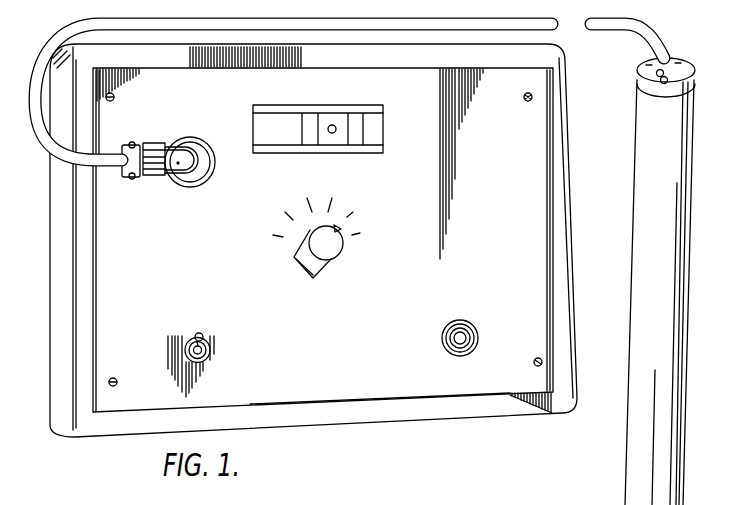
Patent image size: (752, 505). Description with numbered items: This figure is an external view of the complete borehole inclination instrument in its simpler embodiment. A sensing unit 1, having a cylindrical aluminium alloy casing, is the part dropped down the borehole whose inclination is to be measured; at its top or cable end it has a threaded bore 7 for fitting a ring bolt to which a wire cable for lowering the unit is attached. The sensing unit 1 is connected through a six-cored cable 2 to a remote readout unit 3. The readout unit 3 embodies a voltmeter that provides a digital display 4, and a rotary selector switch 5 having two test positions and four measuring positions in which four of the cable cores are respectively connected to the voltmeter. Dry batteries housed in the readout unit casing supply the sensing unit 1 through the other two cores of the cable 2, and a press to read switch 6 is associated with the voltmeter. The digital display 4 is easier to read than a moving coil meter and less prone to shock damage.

The sensing unit 1 is at (690, 260).
The six-cored cable 2 is at (58, 42).
The remote readout unit 3 is at (533, 125).
The digital display 4 is at (360, 133).
The rotary selector switch 5 is at (330, 252).
The press to read switch 6 is at (478, 338).
The threaded bore 7 is at (668, 53).